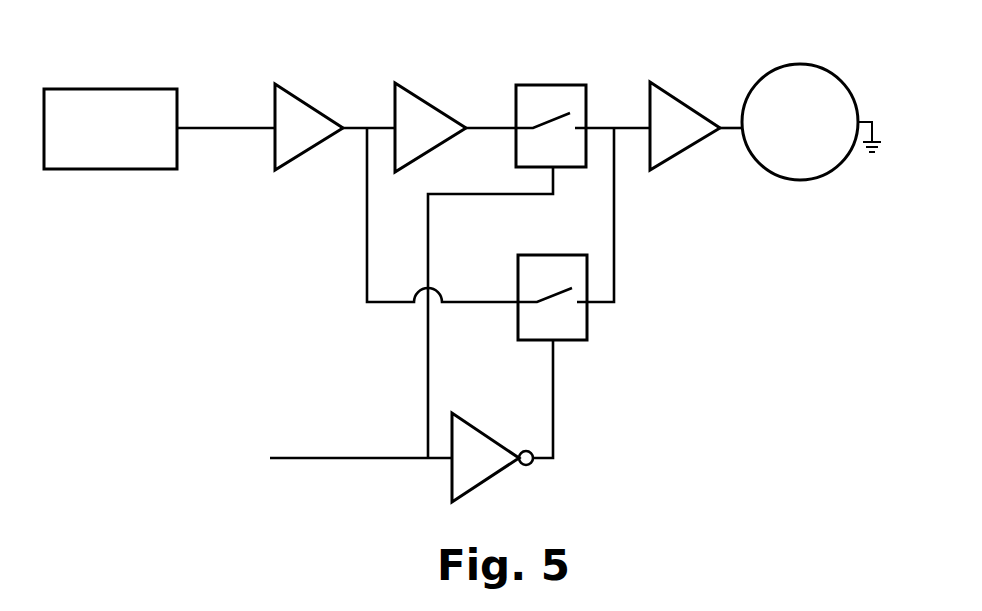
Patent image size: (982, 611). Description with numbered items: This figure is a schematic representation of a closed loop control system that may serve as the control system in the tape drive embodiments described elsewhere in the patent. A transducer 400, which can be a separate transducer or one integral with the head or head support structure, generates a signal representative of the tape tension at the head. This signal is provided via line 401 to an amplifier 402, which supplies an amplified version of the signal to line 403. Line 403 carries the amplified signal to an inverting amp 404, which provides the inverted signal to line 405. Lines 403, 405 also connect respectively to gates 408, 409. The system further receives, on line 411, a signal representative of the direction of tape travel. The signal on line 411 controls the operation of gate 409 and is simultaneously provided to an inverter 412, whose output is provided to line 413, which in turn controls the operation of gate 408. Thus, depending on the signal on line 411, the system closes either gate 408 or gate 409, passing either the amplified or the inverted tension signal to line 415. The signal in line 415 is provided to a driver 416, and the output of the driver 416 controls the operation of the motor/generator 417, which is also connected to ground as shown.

The transducer 400 is at (177, 153).
The line 401 is at (225, 121).
The amplifier 402 is at (315, 103).
The line 403 is at (367, 241).
The inverting amp 404 is at (430, 150).
The line 405 is at (487, 122).
The gate 408 is at (587, 312).
The gate 409 is at (558, 85).
The line 411 is at (328, 462).
The inverter 412 is at (500, 470).
The line 413 is at (553, 408).
The line 415 is at (626, 127).
The driver 416 is at (700, 142).
The motor/generator 417 is at (793, 180).